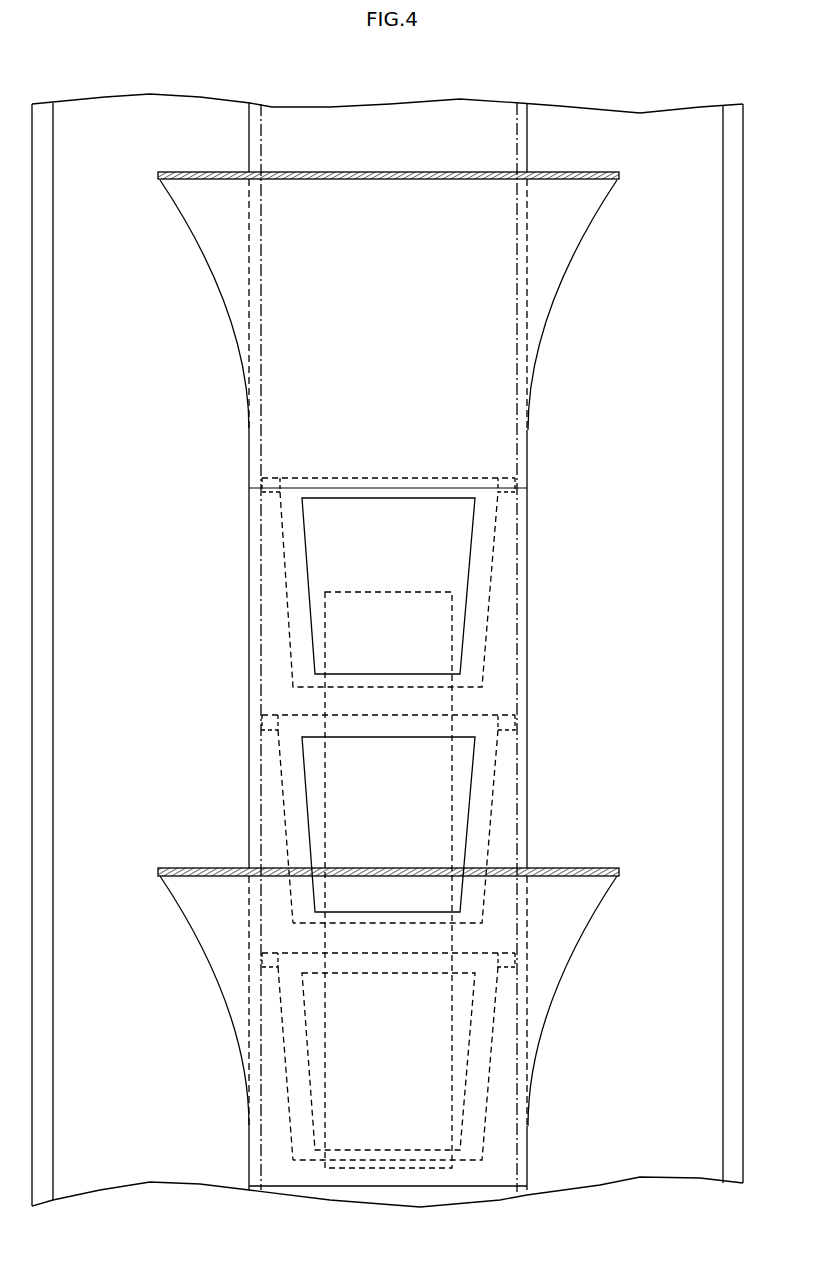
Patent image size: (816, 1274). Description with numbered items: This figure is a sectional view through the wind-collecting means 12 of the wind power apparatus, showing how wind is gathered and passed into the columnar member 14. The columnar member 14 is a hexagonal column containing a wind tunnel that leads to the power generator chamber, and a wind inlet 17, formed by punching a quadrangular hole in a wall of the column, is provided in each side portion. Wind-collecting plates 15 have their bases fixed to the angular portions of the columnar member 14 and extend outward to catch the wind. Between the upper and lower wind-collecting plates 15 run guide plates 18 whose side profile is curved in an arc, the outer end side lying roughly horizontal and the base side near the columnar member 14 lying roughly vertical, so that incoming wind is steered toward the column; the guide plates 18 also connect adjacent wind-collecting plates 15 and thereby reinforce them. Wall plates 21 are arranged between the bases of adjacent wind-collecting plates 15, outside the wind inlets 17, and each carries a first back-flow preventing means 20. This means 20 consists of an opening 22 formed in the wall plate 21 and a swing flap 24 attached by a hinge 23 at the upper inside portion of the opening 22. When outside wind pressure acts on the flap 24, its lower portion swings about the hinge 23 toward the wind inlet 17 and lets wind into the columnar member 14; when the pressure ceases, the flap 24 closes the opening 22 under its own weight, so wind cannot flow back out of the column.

The wind-collecting means 12 is at (398, 77).
The columnar member 14 is at (465, 108).
The wind-collecting plate 15 is at (153, 103).
The wind inlet 17 is at (435, 820).
The guide plate 18 is at (572, 221).
The first back-flow preventing means 20 is at (538, 745).
The wall plate 21 is at (510, 546).
The opening 22 is at (305, 548).
The hinge 23 is at (262, 720).
The swing flap 24 is at (290, 775).